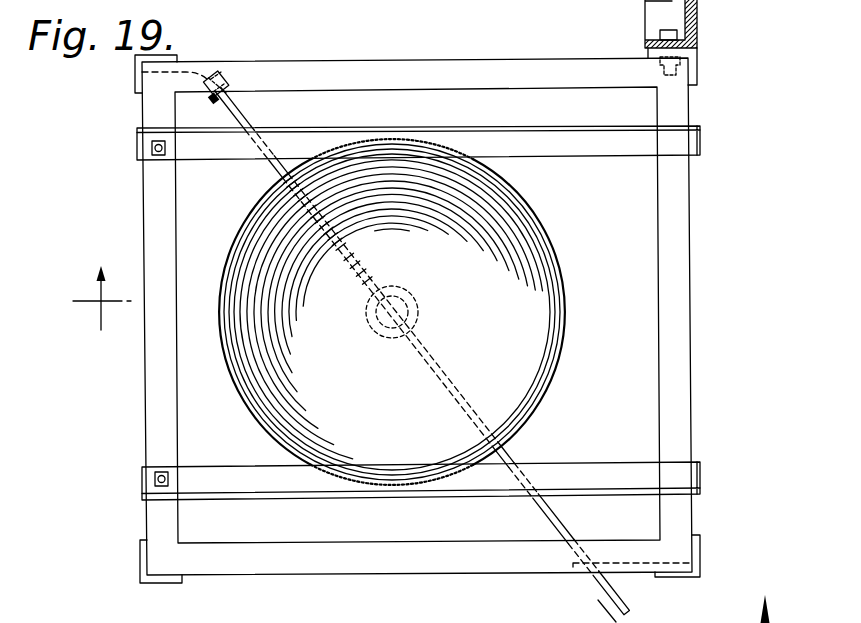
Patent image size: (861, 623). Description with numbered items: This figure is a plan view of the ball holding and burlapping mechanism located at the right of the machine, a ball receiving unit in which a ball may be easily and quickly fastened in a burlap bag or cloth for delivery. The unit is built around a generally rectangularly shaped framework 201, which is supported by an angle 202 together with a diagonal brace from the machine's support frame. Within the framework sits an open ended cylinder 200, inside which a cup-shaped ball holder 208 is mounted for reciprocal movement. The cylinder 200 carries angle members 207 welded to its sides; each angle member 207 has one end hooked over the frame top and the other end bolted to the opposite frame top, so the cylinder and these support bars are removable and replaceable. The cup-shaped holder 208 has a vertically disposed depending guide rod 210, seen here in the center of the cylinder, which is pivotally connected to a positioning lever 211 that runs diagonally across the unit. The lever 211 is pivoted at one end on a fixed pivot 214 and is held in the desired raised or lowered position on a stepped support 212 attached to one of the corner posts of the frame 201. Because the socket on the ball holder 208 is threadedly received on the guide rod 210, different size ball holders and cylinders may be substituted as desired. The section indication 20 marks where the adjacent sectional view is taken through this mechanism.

The section line 20- 20 is at (437, 439).
The open ended cylinder 200 is at (560, 342).
The framework 201 is at (146, 401).
The angle 202 is at (700, 20).
The angle members 207 is at (600, 147).
The cup-shaped ball holder 208 is at (408, 410).
The guide rod 210 is at (377, 331).
The positioning lever 211 is at (283, 168).
The stepped support 212 is at (638, 573).
The fixed pivot 214 is at (224, 71).